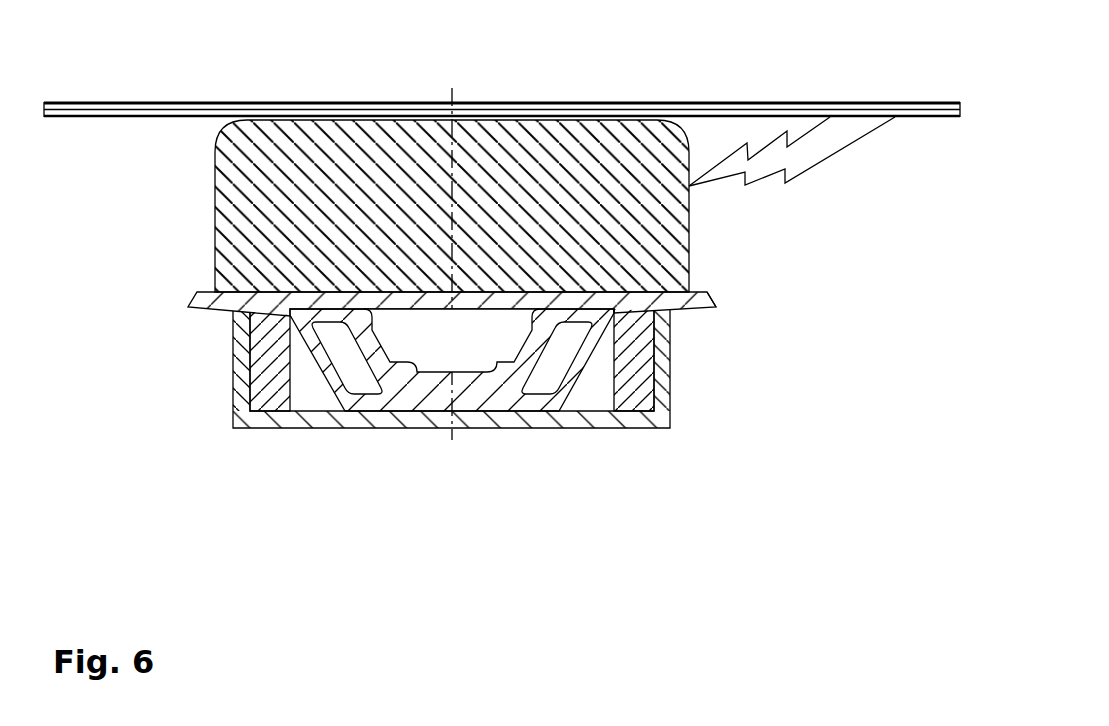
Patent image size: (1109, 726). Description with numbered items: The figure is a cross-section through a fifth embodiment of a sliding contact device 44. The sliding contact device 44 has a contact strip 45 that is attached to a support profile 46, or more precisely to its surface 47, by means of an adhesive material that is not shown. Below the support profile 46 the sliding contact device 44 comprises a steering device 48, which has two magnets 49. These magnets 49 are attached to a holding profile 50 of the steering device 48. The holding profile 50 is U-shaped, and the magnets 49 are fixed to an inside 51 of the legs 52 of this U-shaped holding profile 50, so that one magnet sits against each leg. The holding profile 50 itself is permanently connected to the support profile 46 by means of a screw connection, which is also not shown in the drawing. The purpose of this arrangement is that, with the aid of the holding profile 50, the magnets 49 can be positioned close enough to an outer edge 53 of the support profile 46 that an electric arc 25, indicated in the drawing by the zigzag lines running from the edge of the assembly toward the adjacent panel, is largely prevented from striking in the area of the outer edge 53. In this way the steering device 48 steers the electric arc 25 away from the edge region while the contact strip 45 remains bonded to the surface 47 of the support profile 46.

The electric arc 25 is at (823, 143).
The sliding contact device 44 is at (158, 237).
The contact strip 45 is at (549, 198).
The support profile 46 is at (418, 395).
The surface 47 is at (703, 292).
The steering device 48 is at (452, 403).
The magnets 49 is at (271, 393).
The holding profile 50 is at (320, 422).
The inside 51 is at (647, 367).
The legs 52 is at (241, 372).
The outer edge 53 is at (718, 294).